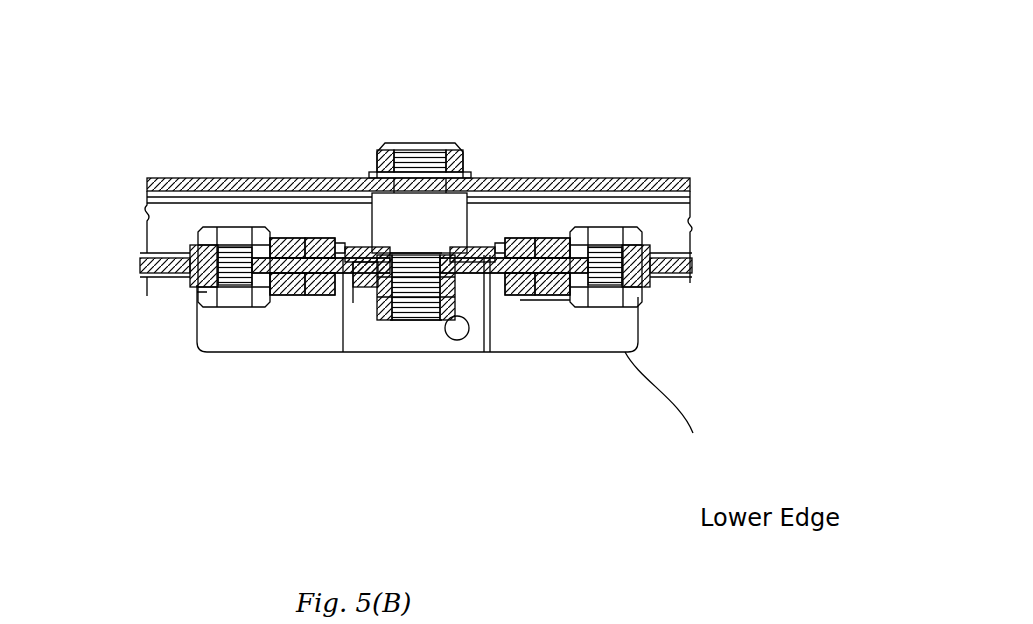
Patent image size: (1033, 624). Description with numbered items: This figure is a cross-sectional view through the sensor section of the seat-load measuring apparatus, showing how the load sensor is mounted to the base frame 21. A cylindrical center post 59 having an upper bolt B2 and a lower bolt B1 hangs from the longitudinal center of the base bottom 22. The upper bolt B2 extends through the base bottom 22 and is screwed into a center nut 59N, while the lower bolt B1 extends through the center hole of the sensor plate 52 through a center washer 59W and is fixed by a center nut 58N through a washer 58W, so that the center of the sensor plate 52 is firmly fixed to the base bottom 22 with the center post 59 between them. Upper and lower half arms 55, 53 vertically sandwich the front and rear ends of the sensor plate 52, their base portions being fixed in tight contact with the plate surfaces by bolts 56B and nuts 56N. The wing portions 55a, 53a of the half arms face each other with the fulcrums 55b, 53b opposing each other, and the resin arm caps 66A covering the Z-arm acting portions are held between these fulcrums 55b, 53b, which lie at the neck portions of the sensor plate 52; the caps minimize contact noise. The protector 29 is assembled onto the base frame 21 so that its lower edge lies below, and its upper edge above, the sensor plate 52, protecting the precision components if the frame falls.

The base frame 21 is at (168, 172).
The base bottom 22 is at (183, 199).
The protector 29 is at (205, 352).
The sensor plate 52 is at (480, 225).
The lower half arm 53 is at (275, 296).
The wing portion 53a is at (313, 297).
The fulcrum 53b is at (343, 352).
The upper half arm 55 is at (272, 246).
The wing portion 55a is at (298, 243).
The fulcrum 55b is at (322, 243).
The bolt 56B is at (195, 282).
The nut 56N is at (200, 305).
The center nut 58N is at (418, 325).
The washer 58W is at (440, 335).
The center post 59 is at (430, 172).
The center nut 59N is at (455, 160).
The center washer 59W is at (396, 172).
The arm cap 66A is at (358, 247).
The lower bolt B1 is at (404, 325).
The upper bolt B2 is at (417, 145).